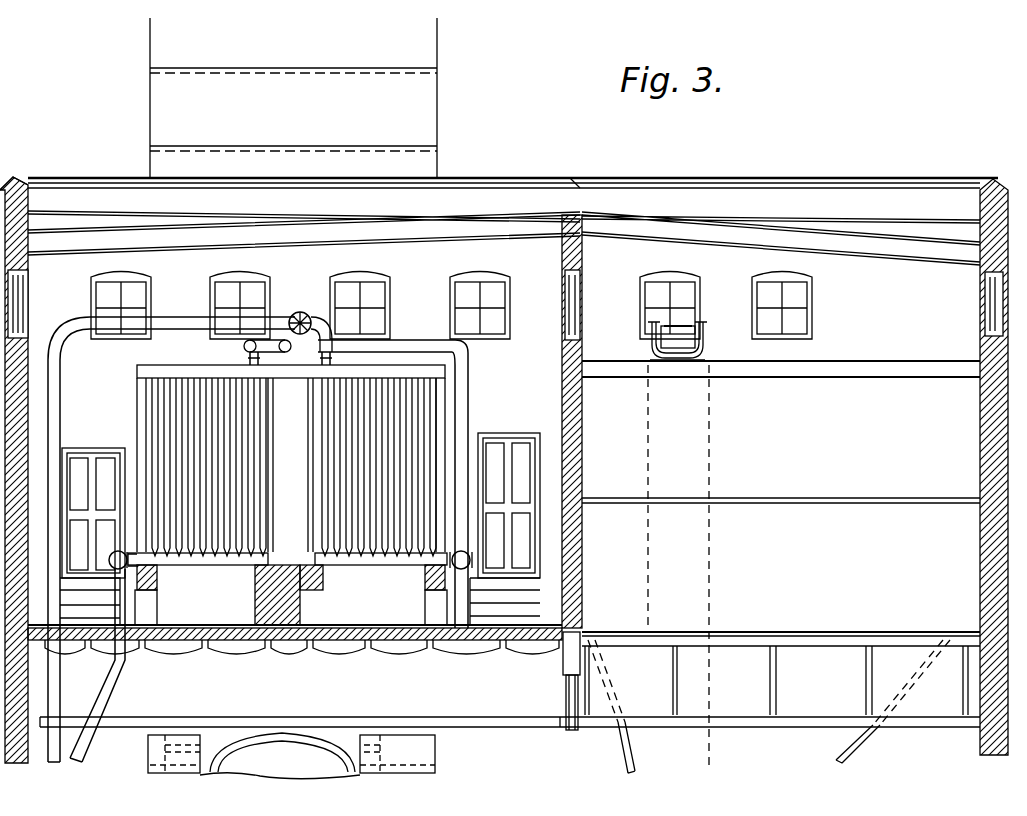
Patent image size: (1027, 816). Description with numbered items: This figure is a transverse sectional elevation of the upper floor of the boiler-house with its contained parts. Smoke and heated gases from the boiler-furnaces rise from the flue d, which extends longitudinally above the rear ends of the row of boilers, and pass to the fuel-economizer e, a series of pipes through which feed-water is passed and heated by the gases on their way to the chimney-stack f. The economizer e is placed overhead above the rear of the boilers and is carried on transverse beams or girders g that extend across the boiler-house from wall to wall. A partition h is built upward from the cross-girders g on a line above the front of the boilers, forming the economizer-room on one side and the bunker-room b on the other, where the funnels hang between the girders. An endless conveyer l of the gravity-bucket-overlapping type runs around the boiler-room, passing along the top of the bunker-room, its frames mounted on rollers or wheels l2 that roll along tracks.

The chimney-stack f is at (293, 98).
The fuel-economizer e is at (287, 495).
The partition h is at (582, 446).
The storage room b is at (781, 565).
The conveyer l is at (704, 347).
The rollers or wheels l2 is at (700, 326).
The transverse beams or girders g is at (470, 724).
The flue d is at (291, 756).